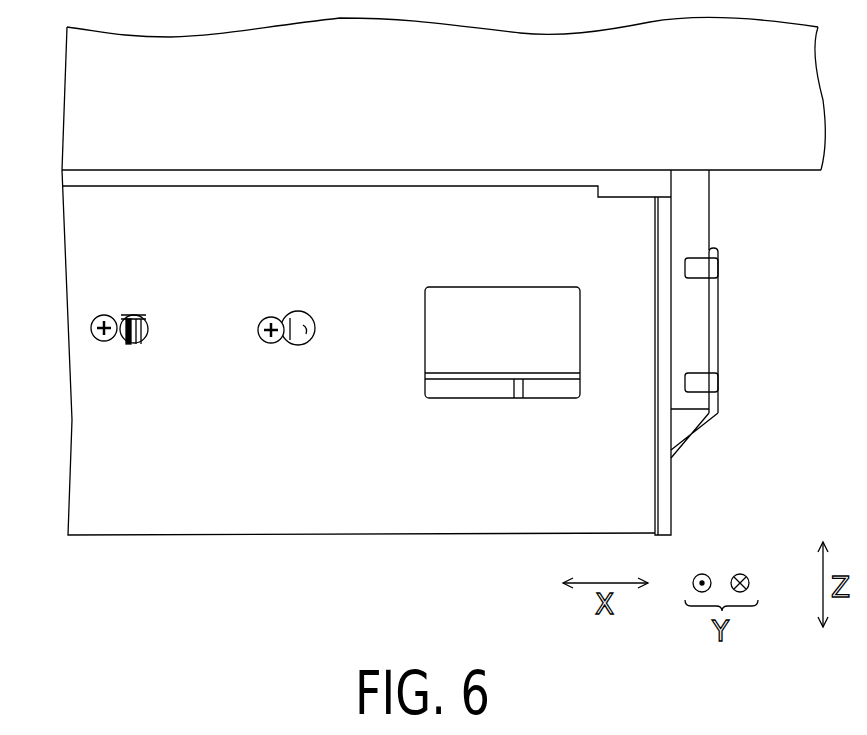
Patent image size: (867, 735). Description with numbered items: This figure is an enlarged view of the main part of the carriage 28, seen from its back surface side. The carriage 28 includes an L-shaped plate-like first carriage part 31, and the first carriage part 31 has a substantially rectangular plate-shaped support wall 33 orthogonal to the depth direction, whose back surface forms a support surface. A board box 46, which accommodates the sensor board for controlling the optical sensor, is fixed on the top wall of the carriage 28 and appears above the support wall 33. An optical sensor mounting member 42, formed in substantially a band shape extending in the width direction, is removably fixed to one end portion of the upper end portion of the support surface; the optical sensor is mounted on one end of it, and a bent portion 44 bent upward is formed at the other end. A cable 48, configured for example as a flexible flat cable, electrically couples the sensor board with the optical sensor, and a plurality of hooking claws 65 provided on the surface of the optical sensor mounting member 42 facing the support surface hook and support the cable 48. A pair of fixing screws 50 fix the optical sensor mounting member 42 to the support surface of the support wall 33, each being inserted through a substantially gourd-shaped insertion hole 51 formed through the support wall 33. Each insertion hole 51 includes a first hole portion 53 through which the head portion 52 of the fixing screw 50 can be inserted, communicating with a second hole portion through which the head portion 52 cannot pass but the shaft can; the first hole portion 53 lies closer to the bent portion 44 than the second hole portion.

The carriage 28 is at (70, 450).
The first carriage part 31 is at (673, 495).
The support wall 33 is at (76, 217).
The optical sensor mounting member 42 is at (135, 315).
The bent portion 44 is at (718, 332).
The board box 46 is at (76, 80).
The cable 48 is at (700, 208).
The fixing screw 50 is at (100, 315).
The insertion hole 51 is at (148, 322).
The head portion 52 is at (92, 333).
The first hole portion 53 is at (140, 345).
The hooking claw 65 is at (697, 268).